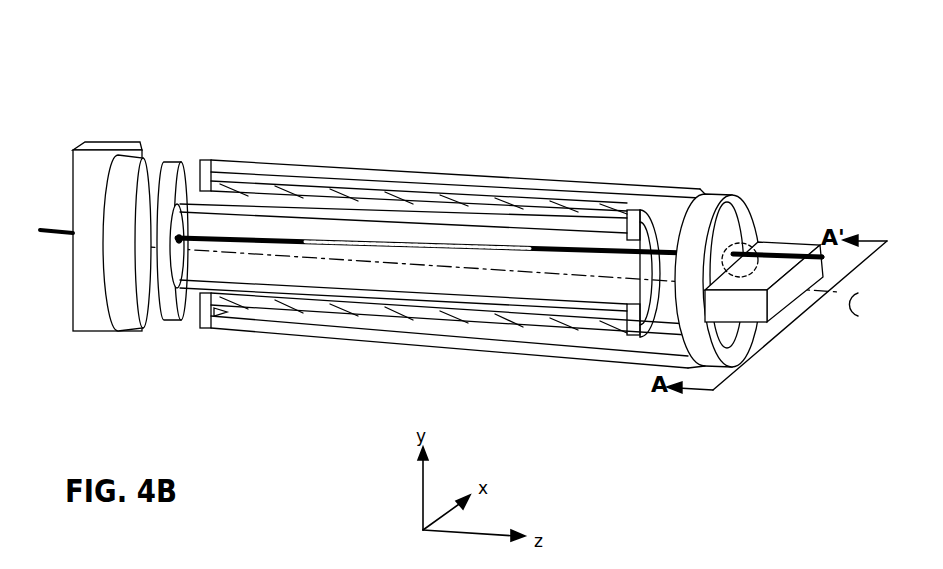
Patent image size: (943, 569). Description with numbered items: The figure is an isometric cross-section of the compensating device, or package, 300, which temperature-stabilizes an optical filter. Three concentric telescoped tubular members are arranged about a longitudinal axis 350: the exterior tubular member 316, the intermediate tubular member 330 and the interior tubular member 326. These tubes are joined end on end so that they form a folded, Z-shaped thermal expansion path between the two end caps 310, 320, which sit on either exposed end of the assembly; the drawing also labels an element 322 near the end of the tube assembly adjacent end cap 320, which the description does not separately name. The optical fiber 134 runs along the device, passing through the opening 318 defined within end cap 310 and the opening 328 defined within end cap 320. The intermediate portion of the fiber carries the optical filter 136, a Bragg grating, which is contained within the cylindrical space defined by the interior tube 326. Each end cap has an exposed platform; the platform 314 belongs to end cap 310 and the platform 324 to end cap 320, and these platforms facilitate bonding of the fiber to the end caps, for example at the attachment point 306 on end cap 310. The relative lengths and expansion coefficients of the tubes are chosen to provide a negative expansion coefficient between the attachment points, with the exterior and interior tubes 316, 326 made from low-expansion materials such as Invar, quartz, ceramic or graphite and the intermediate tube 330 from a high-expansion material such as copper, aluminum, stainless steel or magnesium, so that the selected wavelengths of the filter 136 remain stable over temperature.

The compensating device 300 is at (718, 62).
The exposed platform 324 is at (147, 158).
The end cap 320 is at (186, 166).
The tube end ring 322 is at (211, 172).
The exterior tubular member 316 is at (343, 168).
The intermediate tubular member 330 is at (410, 203).
The interior tubular member 326 is at (503, 227).
The optical filter 136 is at (313, 240).
The opening 328 is at (182, 240).
The end cap 310 is at (705, 182).
The optical fiber 134 is at (717, 269).
The attachment point 306 is at (764, 292).
The longitudinal axis 350 is at (712, 292).
The exposed platform 314 is at (790, 244).
The opening 318 is at (742, 245).